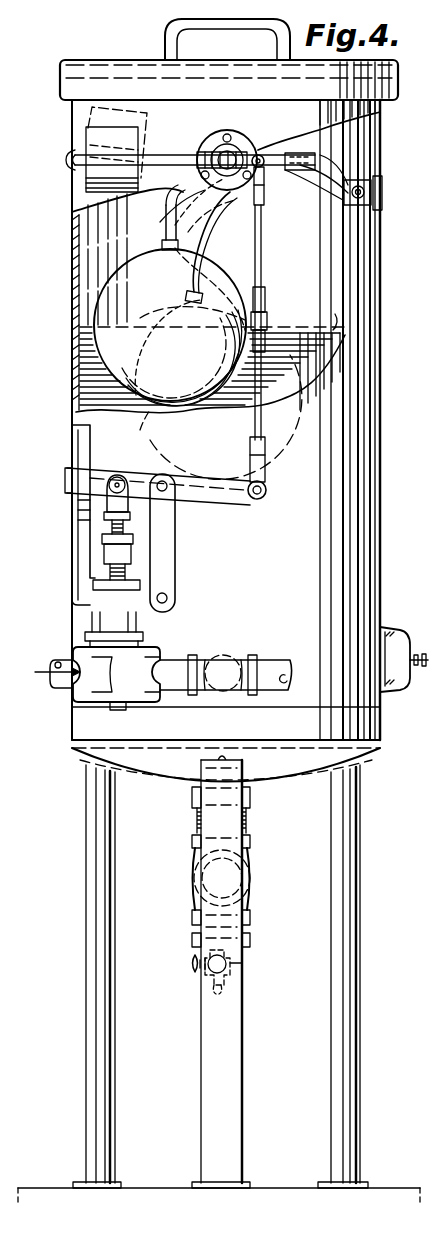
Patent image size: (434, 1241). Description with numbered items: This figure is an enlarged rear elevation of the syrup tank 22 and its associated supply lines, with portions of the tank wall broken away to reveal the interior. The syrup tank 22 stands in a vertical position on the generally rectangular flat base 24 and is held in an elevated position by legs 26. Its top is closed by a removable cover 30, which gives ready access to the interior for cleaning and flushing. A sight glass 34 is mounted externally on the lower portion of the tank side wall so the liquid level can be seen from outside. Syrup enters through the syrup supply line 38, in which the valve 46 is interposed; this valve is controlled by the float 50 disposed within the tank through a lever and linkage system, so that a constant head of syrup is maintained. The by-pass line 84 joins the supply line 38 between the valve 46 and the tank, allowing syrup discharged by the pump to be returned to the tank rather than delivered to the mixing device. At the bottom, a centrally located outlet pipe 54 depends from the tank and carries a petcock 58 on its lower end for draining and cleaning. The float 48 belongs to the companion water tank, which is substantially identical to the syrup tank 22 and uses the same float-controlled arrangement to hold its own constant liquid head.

The removable cover 30 is at (60, 86).
The syrup tank 22 is at (72, 210).
The float 50 is at (128, 308).
The float 48 is at (433, 311).
The valve 46 is at (86, 650).
The by-pass line 84 is at (276, 660).
The syrup supply line 38 is at (58, 684).
The sight glass 34 is at (398, 692).
The outlet pipe 54 is at (246, 862).
The petcock 58 is at (242, 963).
The legs 26 is at (200, 1072).
The base 24 is at (52, 1187).